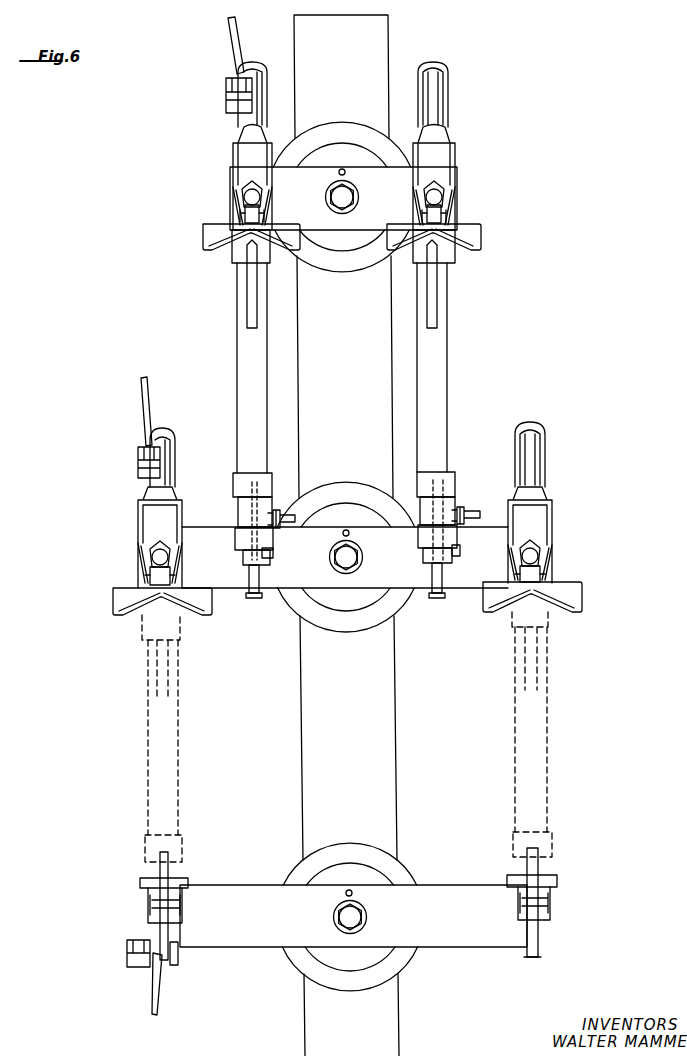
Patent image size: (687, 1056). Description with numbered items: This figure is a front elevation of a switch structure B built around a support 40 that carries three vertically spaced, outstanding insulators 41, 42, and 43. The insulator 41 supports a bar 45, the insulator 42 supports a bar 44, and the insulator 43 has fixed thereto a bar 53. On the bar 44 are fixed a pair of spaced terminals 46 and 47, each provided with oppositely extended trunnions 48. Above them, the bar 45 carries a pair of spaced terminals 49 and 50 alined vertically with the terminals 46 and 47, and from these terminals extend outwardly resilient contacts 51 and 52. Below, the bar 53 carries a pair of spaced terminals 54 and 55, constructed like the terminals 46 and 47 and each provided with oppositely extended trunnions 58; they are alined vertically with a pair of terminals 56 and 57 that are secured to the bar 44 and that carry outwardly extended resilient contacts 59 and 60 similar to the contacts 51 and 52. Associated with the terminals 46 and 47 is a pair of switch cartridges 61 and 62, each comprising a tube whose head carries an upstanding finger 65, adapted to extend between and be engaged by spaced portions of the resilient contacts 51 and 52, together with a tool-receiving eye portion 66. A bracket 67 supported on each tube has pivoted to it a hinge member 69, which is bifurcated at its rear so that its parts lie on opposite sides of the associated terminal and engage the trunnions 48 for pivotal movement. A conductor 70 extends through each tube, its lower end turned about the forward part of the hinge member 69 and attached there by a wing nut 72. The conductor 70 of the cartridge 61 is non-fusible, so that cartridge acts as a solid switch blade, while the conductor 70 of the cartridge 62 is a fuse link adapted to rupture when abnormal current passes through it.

The support 40 is at (393, 402).
The insulator 41 is at (337, 268).
The insulator 42 is at (347, 632).
The insulator 43 is at (341, 985).
The bar 44 is at (464, 590).
The bar 45 is at (364, 170).
The terminal 46 is at (254, 578).
The terminal 47 is at (437, 578).
The trunnions 48 is at (283, 515).
The terminal 49 is at (238, 168).
The terminal 50 is at (450, 154).
The resilient contact 51 is at (203, 242).
The resilient contact 52 is at (481, 238).
The bar 53 is at (226, 945).
The terminal 54 is at (144, 917).
The terminal 55 is at (556, 908).
The terminal 56 is at (152, 536).
The terminal 57 is at (545, 528).
The trunnions 58 is at (140, 882).
The resilient contact 59 is at (113, 602).
The resilient contact 60 is at (582, 597).
The switch cartridge 61 is at (231, 405).
The switch cartridge 62 is at (452, 352).
The upstanding finger 65 is at (240, 207).
The tool-receiving eye portion 66 is at (255, 307).
The bracket 67 is at (233, 483).
The hinge member 69 is at (236, 538).
The conductor 70 is at (276, 550).
The wing nut 72 is at (288, 518).
The switch structure B is at (399, 70).